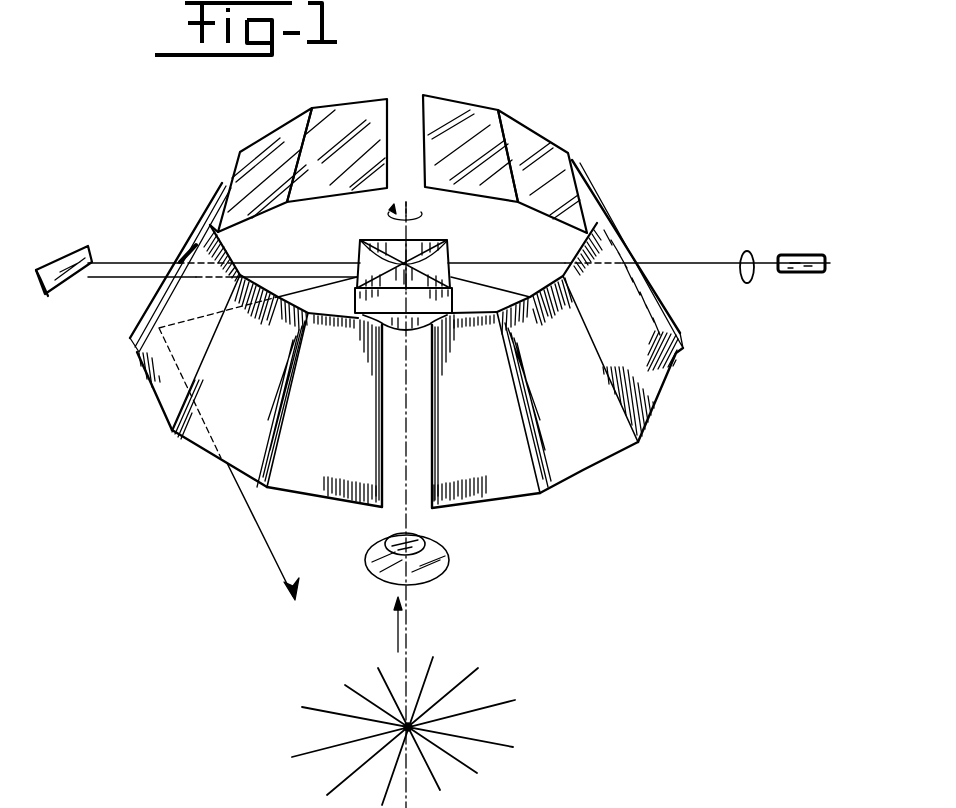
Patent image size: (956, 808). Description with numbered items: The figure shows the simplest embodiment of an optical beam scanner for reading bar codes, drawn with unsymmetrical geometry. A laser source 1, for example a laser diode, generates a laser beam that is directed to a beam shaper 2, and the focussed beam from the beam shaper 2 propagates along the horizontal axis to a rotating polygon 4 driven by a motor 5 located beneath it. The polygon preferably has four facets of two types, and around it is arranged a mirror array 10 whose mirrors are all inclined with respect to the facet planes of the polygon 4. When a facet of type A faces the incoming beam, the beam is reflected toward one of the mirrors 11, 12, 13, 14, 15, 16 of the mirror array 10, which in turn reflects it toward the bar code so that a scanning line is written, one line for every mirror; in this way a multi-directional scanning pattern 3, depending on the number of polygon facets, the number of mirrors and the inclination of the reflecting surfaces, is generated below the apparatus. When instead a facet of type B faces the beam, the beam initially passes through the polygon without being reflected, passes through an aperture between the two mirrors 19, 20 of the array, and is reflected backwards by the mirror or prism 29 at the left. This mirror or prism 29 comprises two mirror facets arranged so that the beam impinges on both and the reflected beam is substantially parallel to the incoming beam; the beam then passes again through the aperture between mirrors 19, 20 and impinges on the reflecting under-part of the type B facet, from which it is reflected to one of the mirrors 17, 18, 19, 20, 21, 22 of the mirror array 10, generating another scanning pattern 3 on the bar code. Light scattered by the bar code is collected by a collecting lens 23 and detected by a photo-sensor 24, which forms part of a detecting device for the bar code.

The laser source 1 is at (802, 257).
The beam shaper 2 is at (747, 252).
The scanning pattern 3 is at (494, 745).
The rotating polygon 4 is at (392, 242).
The motor 5 is at (398, 326).
The mirror array 10 is at (418, 54).
The mirror 11 is at (455, 113).
The mirror 12 is at (537, 144).
The mirror 13 is at (607, 210).
The mirror 14 is at (650, 386).
The mirror 15 is at (576, 455).
The mirror 16 is at (496, 488).
The mirror 17 is at (333, 488).
The mirror 18 is at (215, 456).
The mirror 19 is at (170, 388).
The mirror 20 is at (210, 213).
The mirror 21 is at (272, 143).
The mirror 22 is at (339, 118).
The collecting lens 23 is at (433, 567).
The photo-sensor 24 is at (423, 535).
The mirror or prism 29 is at (60, 252).